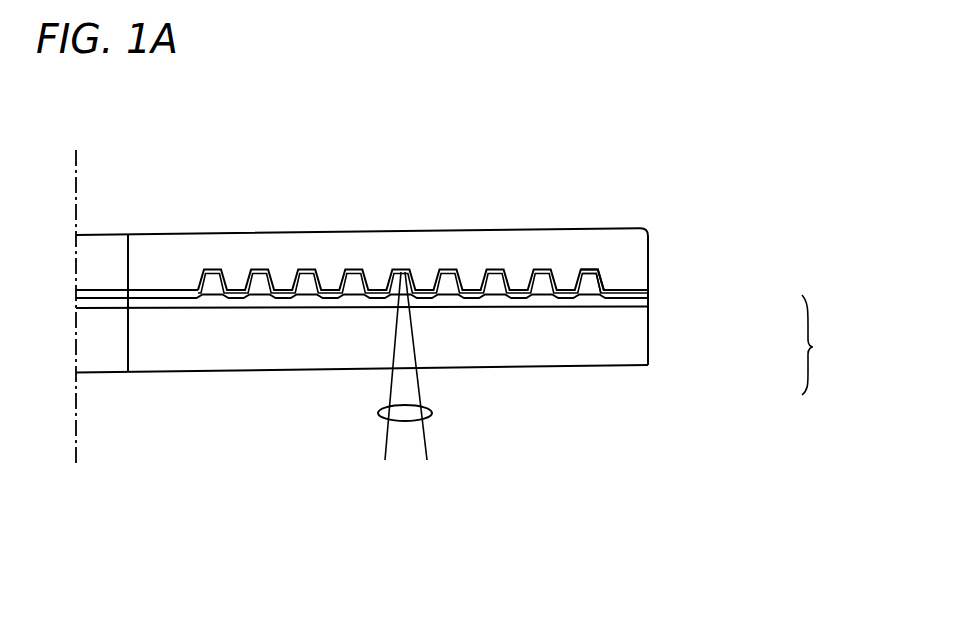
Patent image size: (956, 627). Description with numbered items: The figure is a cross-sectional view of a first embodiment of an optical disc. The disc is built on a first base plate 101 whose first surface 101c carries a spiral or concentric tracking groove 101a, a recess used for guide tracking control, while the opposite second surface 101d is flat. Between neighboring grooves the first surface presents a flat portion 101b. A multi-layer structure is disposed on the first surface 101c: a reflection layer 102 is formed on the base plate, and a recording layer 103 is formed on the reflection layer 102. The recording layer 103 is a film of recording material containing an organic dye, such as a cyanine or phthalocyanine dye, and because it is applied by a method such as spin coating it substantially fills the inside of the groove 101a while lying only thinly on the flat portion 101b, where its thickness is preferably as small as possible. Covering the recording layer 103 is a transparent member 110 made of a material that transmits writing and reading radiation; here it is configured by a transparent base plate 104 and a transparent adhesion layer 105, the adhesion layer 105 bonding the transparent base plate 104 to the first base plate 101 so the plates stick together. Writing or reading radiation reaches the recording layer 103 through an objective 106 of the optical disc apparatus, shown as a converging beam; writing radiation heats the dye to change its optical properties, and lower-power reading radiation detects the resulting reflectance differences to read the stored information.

The first base plate 101 is at (481, 236).
The tracking groove 101a is at (213, 273).
The flat portion 101b is at (234, 287).
The first surface 101c is at (157, 290).
The second surface 101d is at (340, 235).
The reflection layer 102 is at (600, 269).
The recording layer 103 is at (592, 277).
The transparent base plate 104 is at (608, 322).
The transparent adhesion layer 105 is at (612, 297).
The objective 106 is at (420, 408).
The transparent member 110 is at (832, 345).